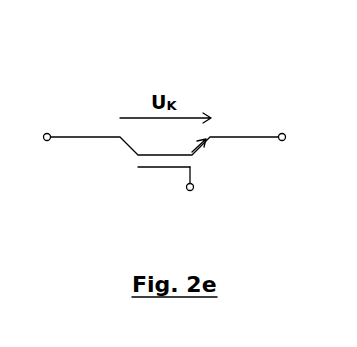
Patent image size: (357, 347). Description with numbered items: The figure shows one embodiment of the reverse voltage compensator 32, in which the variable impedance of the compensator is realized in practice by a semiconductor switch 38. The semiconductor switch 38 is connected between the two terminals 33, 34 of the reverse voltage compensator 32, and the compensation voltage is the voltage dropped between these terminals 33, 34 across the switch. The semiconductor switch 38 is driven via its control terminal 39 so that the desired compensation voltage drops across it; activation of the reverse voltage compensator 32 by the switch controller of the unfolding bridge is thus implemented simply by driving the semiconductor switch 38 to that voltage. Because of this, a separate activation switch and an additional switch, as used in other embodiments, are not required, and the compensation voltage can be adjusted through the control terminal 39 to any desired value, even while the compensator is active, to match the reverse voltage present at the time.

The reverse voltage compensator 32 is at (235, 63).
The terminal 33 is at (46, 133).
The terminal 34 is at (283, 133).
The semiconductor switch 38 is at (165, 168).
The control terminal 39 is at (193, 190).